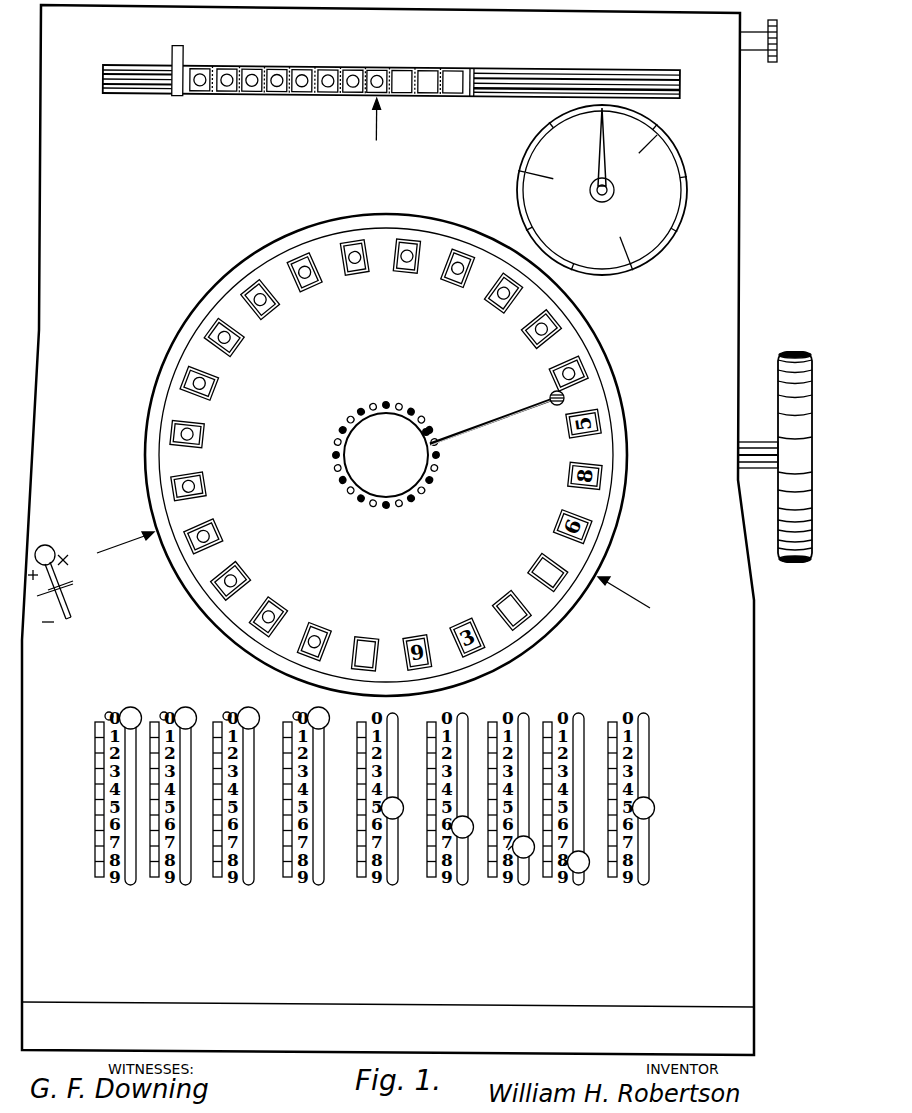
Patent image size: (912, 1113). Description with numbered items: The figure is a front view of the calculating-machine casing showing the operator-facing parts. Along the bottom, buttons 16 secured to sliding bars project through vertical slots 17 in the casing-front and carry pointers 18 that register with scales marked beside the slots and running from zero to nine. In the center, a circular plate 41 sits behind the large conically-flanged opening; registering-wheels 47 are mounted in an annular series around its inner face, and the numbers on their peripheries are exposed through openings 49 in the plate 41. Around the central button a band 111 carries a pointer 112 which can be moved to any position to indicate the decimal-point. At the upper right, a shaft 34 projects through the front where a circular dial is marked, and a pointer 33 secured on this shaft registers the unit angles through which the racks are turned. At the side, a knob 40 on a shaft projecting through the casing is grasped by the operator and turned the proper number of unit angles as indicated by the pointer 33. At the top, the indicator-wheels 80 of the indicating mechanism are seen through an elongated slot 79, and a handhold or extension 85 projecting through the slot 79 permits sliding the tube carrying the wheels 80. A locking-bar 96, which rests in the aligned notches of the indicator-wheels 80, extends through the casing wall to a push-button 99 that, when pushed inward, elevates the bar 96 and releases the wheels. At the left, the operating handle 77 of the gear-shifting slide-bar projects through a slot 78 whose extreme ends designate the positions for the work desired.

The buttons 16 is at (655, 806).
The vertical slots 17 is at (649, 840).
The pointers 18 is at (624, 810).
The pointer 33 is at (598, 152).
The shaft 34 is at (602, 200).
The knob 40 is at (795, 352).
The circular plate 41 is at (386, 477).
The registering-wheels 47 is at (350, 652).
The openings 49 is at (356, 640).
The operating button or handle 77 is at (58, 542).
The slot 78 is at (72, 590).
The elongated slot 79 is at (527, 95).
The indicator-wheels 80 is at (353, 70).
The handhold or extension 85 is at (172, 50).
The locking-bar 96 is at (755, 50).
The push-button 99 is at (778, 36).
The band 111 is at (427, 429).
The pointer 112 is at (485, 423).